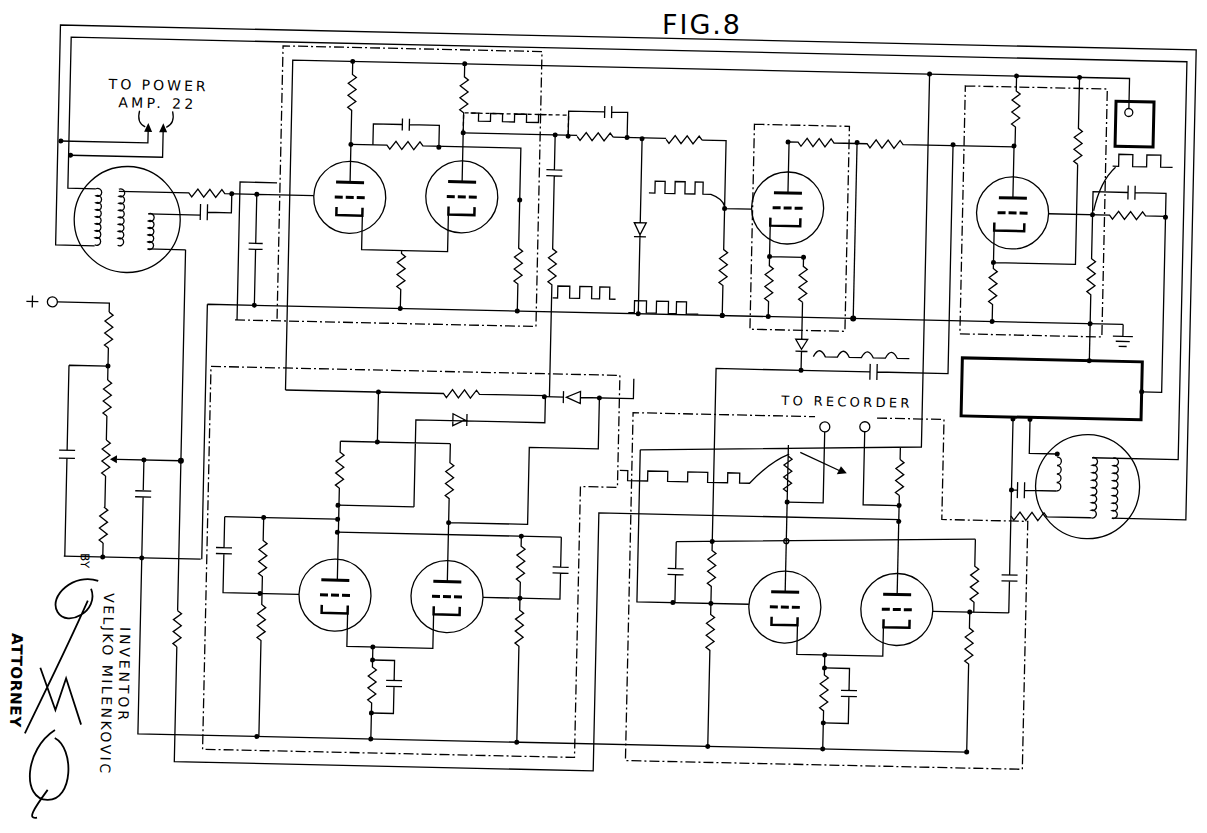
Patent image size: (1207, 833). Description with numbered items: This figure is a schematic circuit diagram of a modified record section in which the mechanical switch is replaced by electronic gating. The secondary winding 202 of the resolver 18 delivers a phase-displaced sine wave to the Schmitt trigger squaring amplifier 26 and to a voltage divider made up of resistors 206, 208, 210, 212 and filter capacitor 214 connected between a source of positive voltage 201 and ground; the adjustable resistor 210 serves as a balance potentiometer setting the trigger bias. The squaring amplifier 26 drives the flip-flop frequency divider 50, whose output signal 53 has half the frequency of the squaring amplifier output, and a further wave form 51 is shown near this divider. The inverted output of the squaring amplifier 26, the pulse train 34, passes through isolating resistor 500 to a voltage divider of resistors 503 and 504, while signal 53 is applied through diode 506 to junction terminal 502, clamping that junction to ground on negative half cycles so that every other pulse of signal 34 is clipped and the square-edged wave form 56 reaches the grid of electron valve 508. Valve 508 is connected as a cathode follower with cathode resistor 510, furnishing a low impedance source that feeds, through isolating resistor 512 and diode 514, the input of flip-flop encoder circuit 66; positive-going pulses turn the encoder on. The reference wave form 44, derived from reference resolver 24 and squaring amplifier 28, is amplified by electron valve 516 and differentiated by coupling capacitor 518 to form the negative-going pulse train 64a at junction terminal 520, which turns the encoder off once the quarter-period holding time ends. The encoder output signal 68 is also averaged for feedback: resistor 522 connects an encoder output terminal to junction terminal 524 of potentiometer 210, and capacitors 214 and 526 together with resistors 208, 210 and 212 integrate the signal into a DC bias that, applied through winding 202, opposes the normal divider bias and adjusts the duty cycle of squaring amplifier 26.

The resolver 18 is at (90, 274).
The reference resolver 24 is at (1122, 440).
The squaring amplifier 26 is at (270, 100).
The squaring amplifier 28 is at (998, 410).
The pulse train 34 is at (506, 113).
The output wave form 44 is at (1135, 186).
The flip-flop frequency divider circuit 50 is at (482, 760).
The waveform 51 is at (584, 292).
The output signal 53 is at (668, 298).
The wave form 56 is at (687, 177).
The pulse train 64a is at (852, 314).
The flip-flop encoder circuit 66 is at (1032, 592).
The output signal 68 is at (704, 478).
The source of positive voltage 201 is at (1160, 90).
The secondary winding 202 is at (120, 203).
The resistor 206 is at (112, 340).
The resistor 208 is at (112, 397).
The adjustable resistor 210 is at (116, 466).
The resistor 212 is at (100, 536).
The filter capacitor 214 is at (66, 462).
The isolating resistor 500 is at (607, 136).
The junction terminal 502 is at (642, 134).
The resistor 503 is at (700, 134).
The resistor 504 is at (714, 260).
The diode 506 is at (632, 226).
The electron valve 508 is at (824, 165).
The cathode resistor 510 is at (736, 316).
The isolating resistor 512 is at (812, 290).
The diode 514 is at (794, 342).
The electron valve 516 is at (1048, 158).
The coupling capacitor 518 is at (862, 372).
The junction terminal 520 is at (822, 352).
The resistor 522 is at (188, 642).
The junction terminal 524 is at (186, 469).
The capacitor 526 is at (152, 503).